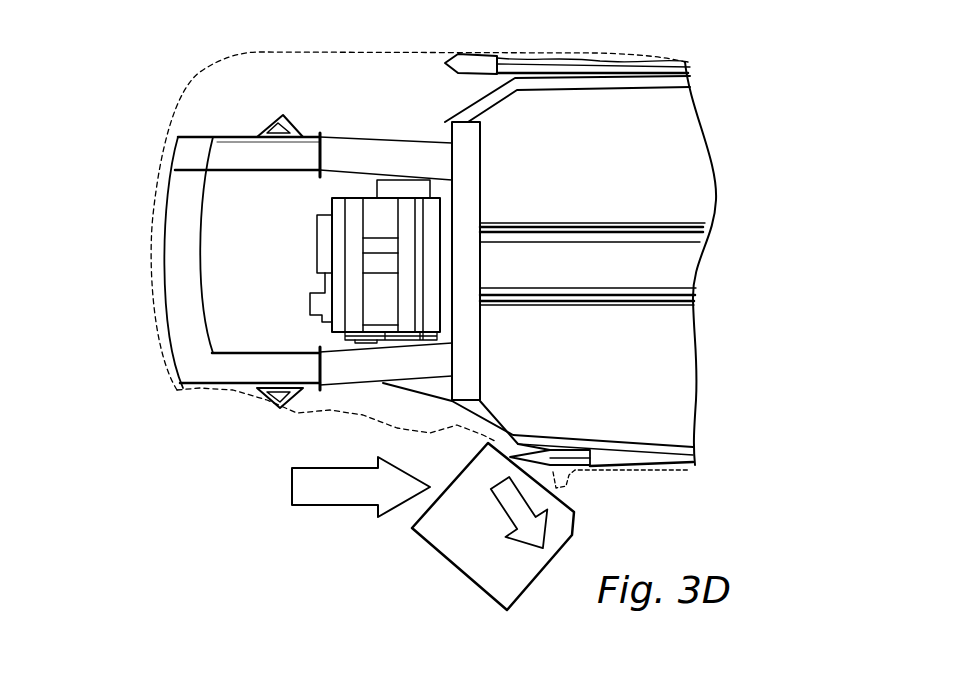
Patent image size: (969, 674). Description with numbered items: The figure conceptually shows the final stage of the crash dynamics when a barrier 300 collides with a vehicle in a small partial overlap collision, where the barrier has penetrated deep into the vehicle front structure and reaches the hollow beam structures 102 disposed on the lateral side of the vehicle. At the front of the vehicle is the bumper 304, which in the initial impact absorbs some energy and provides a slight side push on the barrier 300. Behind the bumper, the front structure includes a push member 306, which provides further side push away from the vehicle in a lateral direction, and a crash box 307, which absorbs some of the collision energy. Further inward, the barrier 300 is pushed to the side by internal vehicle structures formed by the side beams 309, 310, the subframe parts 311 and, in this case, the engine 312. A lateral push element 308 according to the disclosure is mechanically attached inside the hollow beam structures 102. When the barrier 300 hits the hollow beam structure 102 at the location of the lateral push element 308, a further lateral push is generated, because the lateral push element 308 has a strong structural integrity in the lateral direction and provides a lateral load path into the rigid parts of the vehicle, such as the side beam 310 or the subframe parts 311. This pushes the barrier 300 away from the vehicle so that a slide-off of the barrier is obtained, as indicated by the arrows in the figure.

The hollow beam structures 102 is at (589, 485).
The barrier 300 is at (470, 557).
The bumper 304 is at (175, 261).
The push member 306 is at (280, 408).
The crash box 307 is at (233, 370).
The lateral push element 308 is at (556, 446).
The side beam 309 is at (363, 382).
The side beam 310 is at (490, 421).
The subframe parts 311 is at (463, 317).
The engine 312 is at (410, 223).